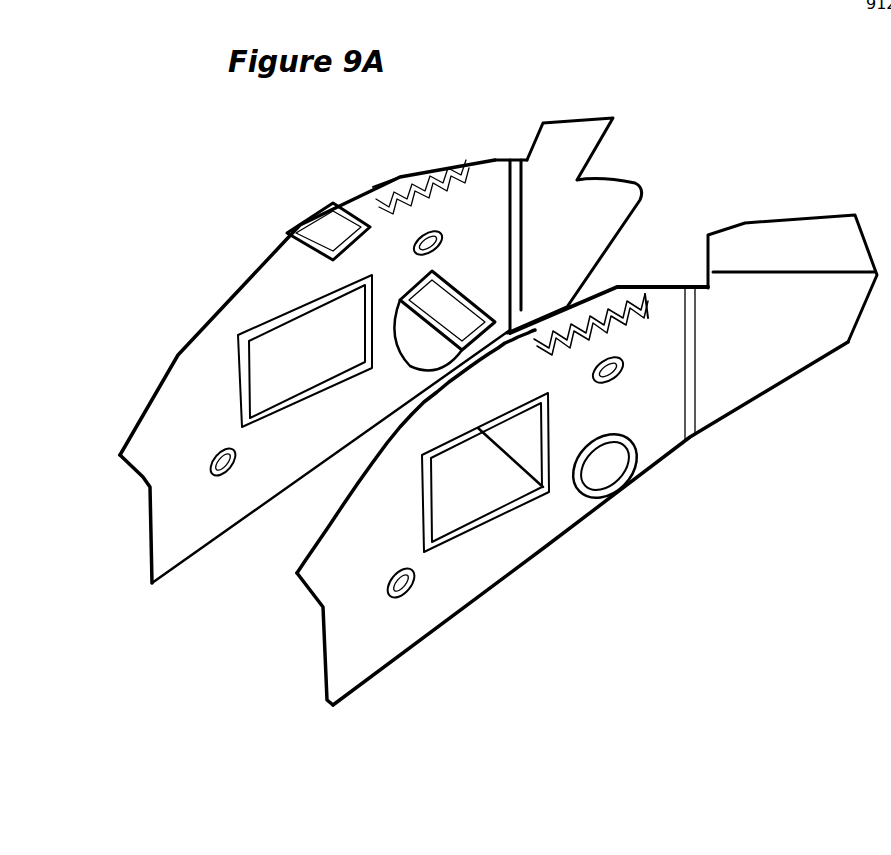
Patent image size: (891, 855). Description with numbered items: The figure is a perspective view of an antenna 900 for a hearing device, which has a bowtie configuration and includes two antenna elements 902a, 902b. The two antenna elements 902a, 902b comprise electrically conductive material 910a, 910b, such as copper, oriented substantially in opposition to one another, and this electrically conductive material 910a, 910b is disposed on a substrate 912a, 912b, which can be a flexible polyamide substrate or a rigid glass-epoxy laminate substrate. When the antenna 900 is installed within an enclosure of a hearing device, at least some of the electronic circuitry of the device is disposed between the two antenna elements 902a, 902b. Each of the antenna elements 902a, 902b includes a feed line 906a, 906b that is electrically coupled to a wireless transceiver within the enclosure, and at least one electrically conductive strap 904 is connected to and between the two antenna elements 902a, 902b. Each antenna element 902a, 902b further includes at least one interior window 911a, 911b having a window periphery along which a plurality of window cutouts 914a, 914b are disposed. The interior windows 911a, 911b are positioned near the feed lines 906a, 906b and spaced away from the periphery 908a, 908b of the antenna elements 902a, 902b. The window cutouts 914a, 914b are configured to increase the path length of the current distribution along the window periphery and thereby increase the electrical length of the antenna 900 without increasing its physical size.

The antenna 900 is at (706, 125).
The antenna element 902a is at (783, 340).
The antenna element 902b is at (173, 400).
The electrically conductive strap 904 is at (602, 517).
The feed line 906a is at (440, 293).
The feed line 906b is at (328, 225).
The periphery 908a is at (720, 235).
The periphery 908b is at (490, 157).
The electrically conductive material 910a is at (650, 420).
The electrically conductive material 910b is at (178, 338).
The interior window 911a is at (655, 316).
The interior window 911b is at (385, 183).
The substrate 912a is at (303, 523).
The substrate 912b is at (198, 450).
The window cutouts 914a is at (603, 297).
The window cutouts 914b is at (438, 180).